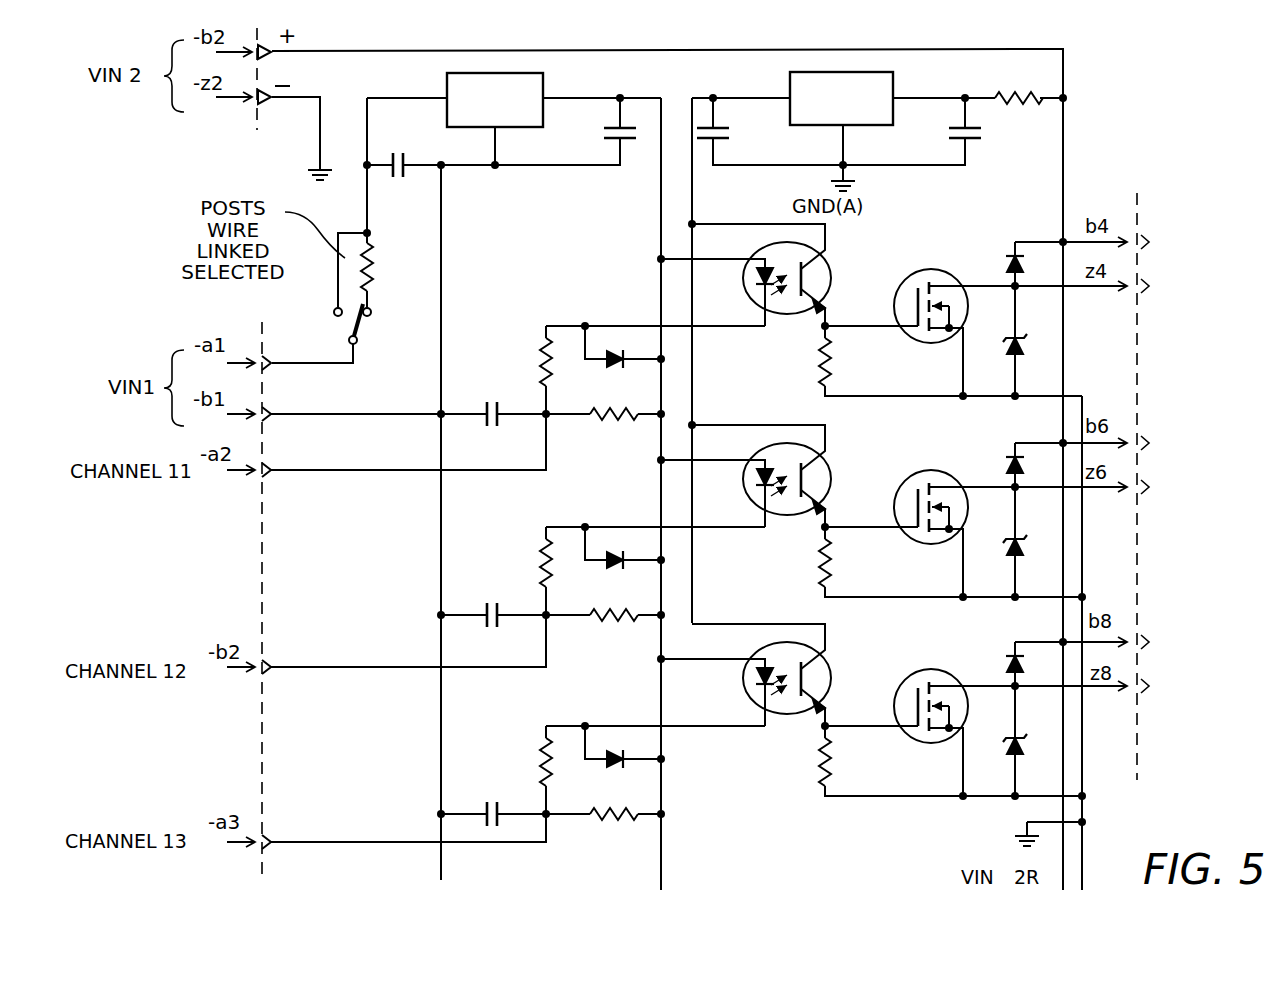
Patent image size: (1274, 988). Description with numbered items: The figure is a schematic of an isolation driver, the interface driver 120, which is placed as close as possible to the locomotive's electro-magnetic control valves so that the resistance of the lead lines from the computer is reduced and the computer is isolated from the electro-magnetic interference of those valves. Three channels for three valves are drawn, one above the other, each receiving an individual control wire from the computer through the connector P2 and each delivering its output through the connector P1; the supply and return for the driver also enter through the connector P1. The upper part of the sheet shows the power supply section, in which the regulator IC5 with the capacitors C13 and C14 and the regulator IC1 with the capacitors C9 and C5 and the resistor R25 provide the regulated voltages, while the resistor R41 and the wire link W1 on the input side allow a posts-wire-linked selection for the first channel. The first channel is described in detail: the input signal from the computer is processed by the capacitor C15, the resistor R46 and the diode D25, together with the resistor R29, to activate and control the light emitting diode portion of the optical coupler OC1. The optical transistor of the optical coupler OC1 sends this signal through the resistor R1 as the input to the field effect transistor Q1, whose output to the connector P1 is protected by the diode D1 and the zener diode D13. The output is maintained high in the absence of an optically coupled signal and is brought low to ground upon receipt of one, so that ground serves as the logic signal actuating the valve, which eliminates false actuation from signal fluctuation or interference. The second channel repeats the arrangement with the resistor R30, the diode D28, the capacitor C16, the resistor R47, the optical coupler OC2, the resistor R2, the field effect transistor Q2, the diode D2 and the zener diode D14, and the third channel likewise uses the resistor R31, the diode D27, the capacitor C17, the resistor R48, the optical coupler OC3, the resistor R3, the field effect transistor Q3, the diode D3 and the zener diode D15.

The interface driver 120 is at (766, 45).
The connector P1 is at (697, 391).
The connector P2 is at (263, 589).
The 5V voltage regulator IC5 is at (493, 121).
The 12V voltage regulator IC1 is at (877, 131).
The capacitor C13 is at (402, 181).
The capacitor C14 is at (549, 131).
The capacitor C9 is at (767, 129).
The capacitor C5 is at (912, 129).
The resistor R25 is at (1016, 110).
The resistor R41 is at (390, 268).
The wire link switch W1 is at (321, 298).
The resistor R29 is at (517, 370).
The diode D25 is at (625, 360).
The capacitor C15 is at (493, 425).
The resistor R46 is at (605, 427).
The optical coupler OC1 is at (767, 275).
The resistor R1 is at (950, 363).
The field effect transistor Q1 is at (920, 319).
The diode D1 is at (1030, 266).
The zener diode D13 is at (1035, 341).
The resistor R30 is at (517, 571).
The diode D28 is at (625, 561).
The capacitor C16 is at (493, 626).
The resistor R47 is at (605, 628).
The optocoupler OC2 is at (768, 476).
The resistor R2 is at (952, 564).
The MOSFET transistor Q2 is at (920, 520).
The diode D2 is at (1030, 467).
The zener diode D14 is at (1035, 542).
The resistor R31 is at (523, 770).
The diode D27 is at (625, 760).
The capacitor C17 is at (493, 799).
The resistor R48 is at (605, 826).
The optocoupler OC3 is at (769, 677).
The resistor R3 is at (952, 763).
The MOSFET transistor Q3 is at (920, 721).
The diode D3 is at (1031, 666).
The zener diode D15 is at (1035, 741).